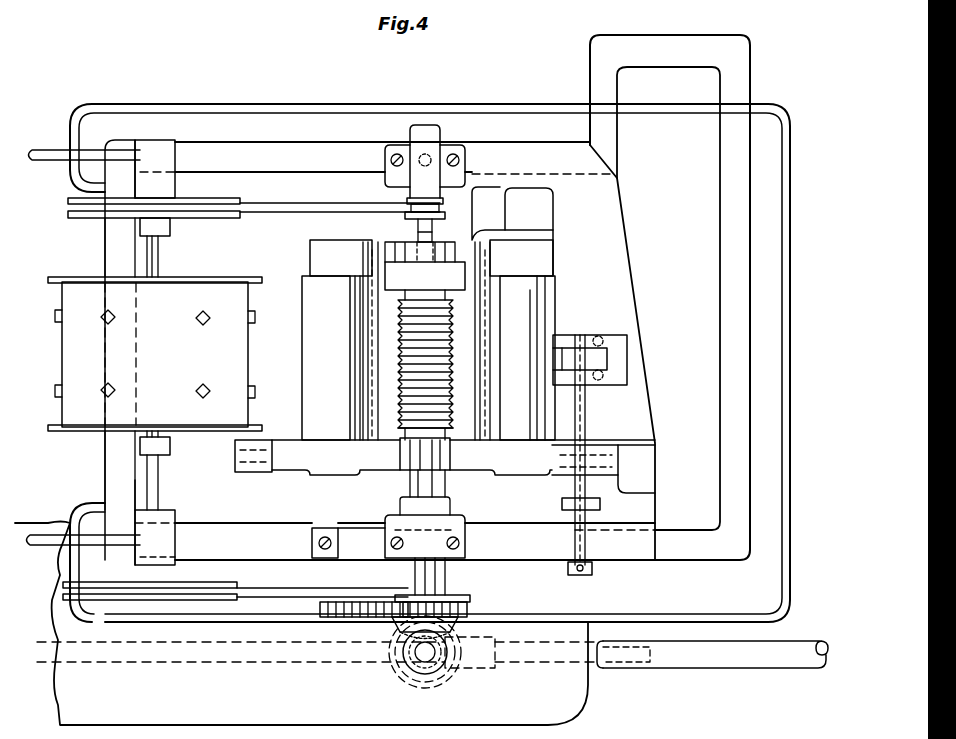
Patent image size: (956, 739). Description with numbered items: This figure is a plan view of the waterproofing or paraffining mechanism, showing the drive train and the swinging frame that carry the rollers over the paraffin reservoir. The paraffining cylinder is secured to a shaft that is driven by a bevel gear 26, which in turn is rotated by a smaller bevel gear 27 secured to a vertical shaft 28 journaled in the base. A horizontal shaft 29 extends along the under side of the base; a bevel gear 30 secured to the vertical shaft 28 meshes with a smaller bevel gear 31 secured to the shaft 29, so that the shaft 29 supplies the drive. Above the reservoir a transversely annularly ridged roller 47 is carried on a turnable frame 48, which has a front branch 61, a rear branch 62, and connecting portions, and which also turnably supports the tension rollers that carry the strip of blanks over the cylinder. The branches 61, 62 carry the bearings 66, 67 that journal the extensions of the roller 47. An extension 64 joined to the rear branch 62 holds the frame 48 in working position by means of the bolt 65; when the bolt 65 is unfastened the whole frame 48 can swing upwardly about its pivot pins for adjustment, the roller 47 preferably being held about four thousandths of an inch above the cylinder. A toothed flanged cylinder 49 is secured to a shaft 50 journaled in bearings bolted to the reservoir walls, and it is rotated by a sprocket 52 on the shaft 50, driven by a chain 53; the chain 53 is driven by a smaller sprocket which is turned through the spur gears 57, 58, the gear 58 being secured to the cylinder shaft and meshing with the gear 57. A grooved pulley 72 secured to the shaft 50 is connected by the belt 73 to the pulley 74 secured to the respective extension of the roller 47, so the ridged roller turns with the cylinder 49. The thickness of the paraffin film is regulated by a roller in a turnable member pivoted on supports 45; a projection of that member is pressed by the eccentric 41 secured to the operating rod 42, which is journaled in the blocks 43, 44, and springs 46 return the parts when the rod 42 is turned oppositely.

The bevel gear 26 is at (395, 626).
The smaller bevel gear 27 is at (404, 656).
The vertical shaft 28 is at (422, 680).
The horizontal shaft 29 is at (597, 666).
The bevel gear 30 is at (446, 680).
The smaller bevel gear 31 is at (472, 668).
The eccentric 41 is at (587, 385).
The operating rod 42 is at (590, 545).
The block 43 is at (612, 337).
The block 44 is at (600, 508).
The supports 45 is at (552, 236).
The springs 46 is at (596, 338).
The transversely annularly ridged roller 47 is at (448, 378).
The turnable frame 48 is at (497, 474).
The toothed flanged cylinder 49 is at (80, 418).
The shaft 50 is at (162, 262).
The sprocket 52 is at (182, 592).
The chain 53 is at (140, 598).
The spur gear 57 is at (330, 618).
The spur gear 58 is at (468, 610).
The front branch 61 is at (357, 472).
The rear branch 62 is at (364, 243).
The extension 64 is at (430, 125).
The bolt 65 is at (412, 152).
The bearing 66 is at (405, 470).
The bearing 67 is at (406, 252).
The grooved pulley 72 is at (244, 200).
The belt 73 is at (305, 207).
The pulley 74 is at (442, 207).